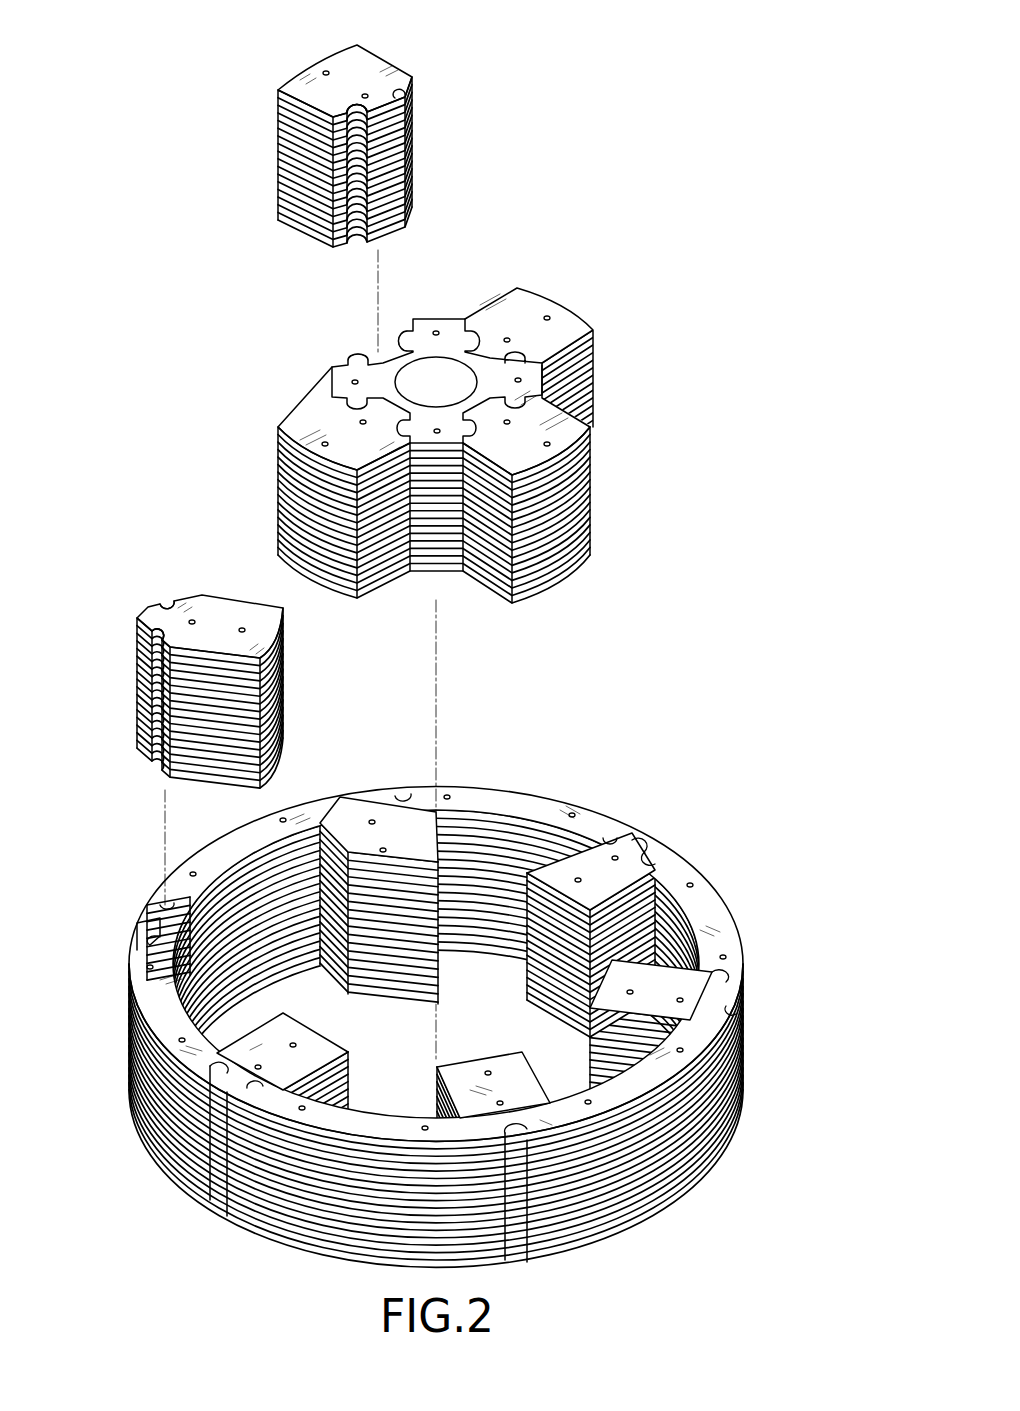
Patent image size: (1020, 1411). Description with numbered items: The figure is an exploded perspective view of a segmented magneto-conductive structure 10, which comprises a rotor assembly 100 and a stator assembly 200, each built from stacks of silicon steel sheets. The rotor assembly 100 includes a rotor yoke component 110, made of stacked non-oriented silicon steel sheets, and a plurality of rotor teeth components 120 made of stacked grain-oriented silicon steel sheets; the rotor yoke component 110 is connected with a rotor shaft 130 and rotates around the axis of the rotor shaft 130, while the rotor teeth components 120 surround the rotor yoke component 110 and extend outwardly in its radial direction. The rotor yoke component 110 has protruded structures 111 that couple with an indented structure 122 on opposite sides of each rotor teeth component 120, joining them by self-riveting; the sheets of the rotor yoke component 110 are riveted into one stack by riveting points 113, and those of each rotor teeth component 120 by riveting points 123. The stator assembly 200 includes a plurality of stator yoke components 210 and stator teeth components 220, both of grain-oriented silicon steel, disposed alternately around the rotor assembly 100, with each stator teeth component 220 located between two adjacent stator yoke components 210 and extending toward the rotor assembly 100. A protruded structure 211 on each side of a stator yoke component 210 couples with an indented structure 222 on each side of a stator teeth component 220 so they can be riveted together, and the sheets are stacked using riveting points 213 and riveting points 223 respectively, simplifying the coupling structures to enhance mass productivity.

The segmented magneto-conductive structure 10 is at (731, 201).
The rotor assembly 100 is at (470, 434).
The rotor yoke component 110 is at (308, 350).
The protruded structures 111 is at (357, 356).
The riveting points 113 is at (441, 432).
The rotor teeth components 120 is at (278, 70).
The indented structure 122 is at (402, 86).
The riveting points 123 is at (360, 423).
The rotor shaft 130 is at (440, 370).
The stator assembly 200 is at (702, 836).
The stator yoke components 210 is at (142, 883).
The protruded structure 211 is at (178, 902).
The riveting points 213 is at (728, 957).
The stator teeth components 220 is at (128, 592).
The indented structure 222 is at (170, 598).
The riveting points 223 is at (582, 880).